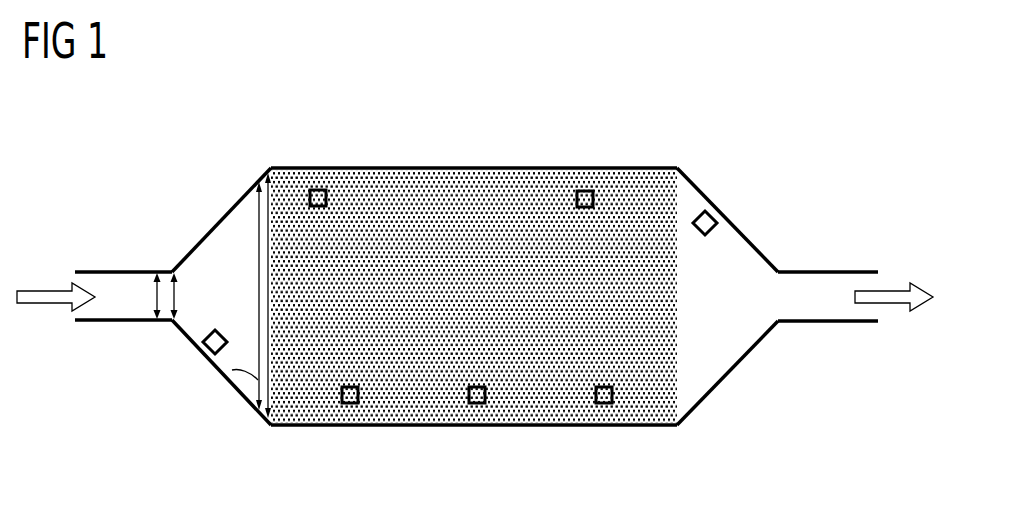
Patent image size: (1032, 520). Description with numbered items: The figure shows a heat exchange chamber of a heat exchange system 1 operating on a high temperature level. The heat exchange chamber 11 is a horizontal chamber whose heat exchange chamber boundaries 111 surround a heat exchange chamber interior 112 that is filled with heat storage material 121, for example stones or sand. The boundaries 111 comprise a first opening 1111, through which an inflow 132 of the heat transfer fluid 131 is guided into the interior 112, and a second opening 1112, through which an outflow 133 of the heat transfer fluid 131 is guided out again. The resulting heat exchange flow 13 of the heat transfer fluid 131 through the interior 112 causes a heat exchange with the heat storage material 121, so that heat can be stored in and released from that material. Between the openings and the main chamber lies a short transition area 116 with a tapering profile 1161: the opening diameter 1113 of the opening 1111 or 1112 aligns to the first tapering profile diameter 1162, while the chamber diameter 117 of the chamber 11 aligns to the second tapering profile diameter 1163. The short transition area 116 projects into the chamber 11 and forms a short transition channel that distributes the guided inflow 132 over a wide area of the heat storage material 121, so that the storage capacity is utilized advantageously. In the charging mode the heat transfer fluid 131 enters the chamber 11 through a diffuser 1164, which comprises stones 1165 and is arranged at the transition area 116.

The heat exchange system 1 is at (856, 78).
The heat exchange chamber 11 is at (676, 152).
The heat exchange chamber boundaries 111 is at (663, 428).
The heat exchange chamber interior 112 is at (266, 384).
The first opening 1111 is at (102, 312).
The second opening 1112 is at (827, 312).
The opening diameter 1113 is at (152, 297).
The transition area 116 is at (247, 207).
The tapering profile 1161 is at (235, 268).
The first tapering profile diameter 1162 is at (180, 284).
The second tapering profile diameter 1163 is at (254, 232).
The diffuser 1164 is at (247, 368).
The stones 1165 is at (202, 408).
The chamber diameter 117 is at (270, 323).
The heat storage material 121 is at (520, 410).
The heat exchange flow 13 is at (110, 283).
The heat transfer fluid 131 is at (51, 291).
The inflow 132 is at (33, 303).
The outflow 133 is at (897, 296).